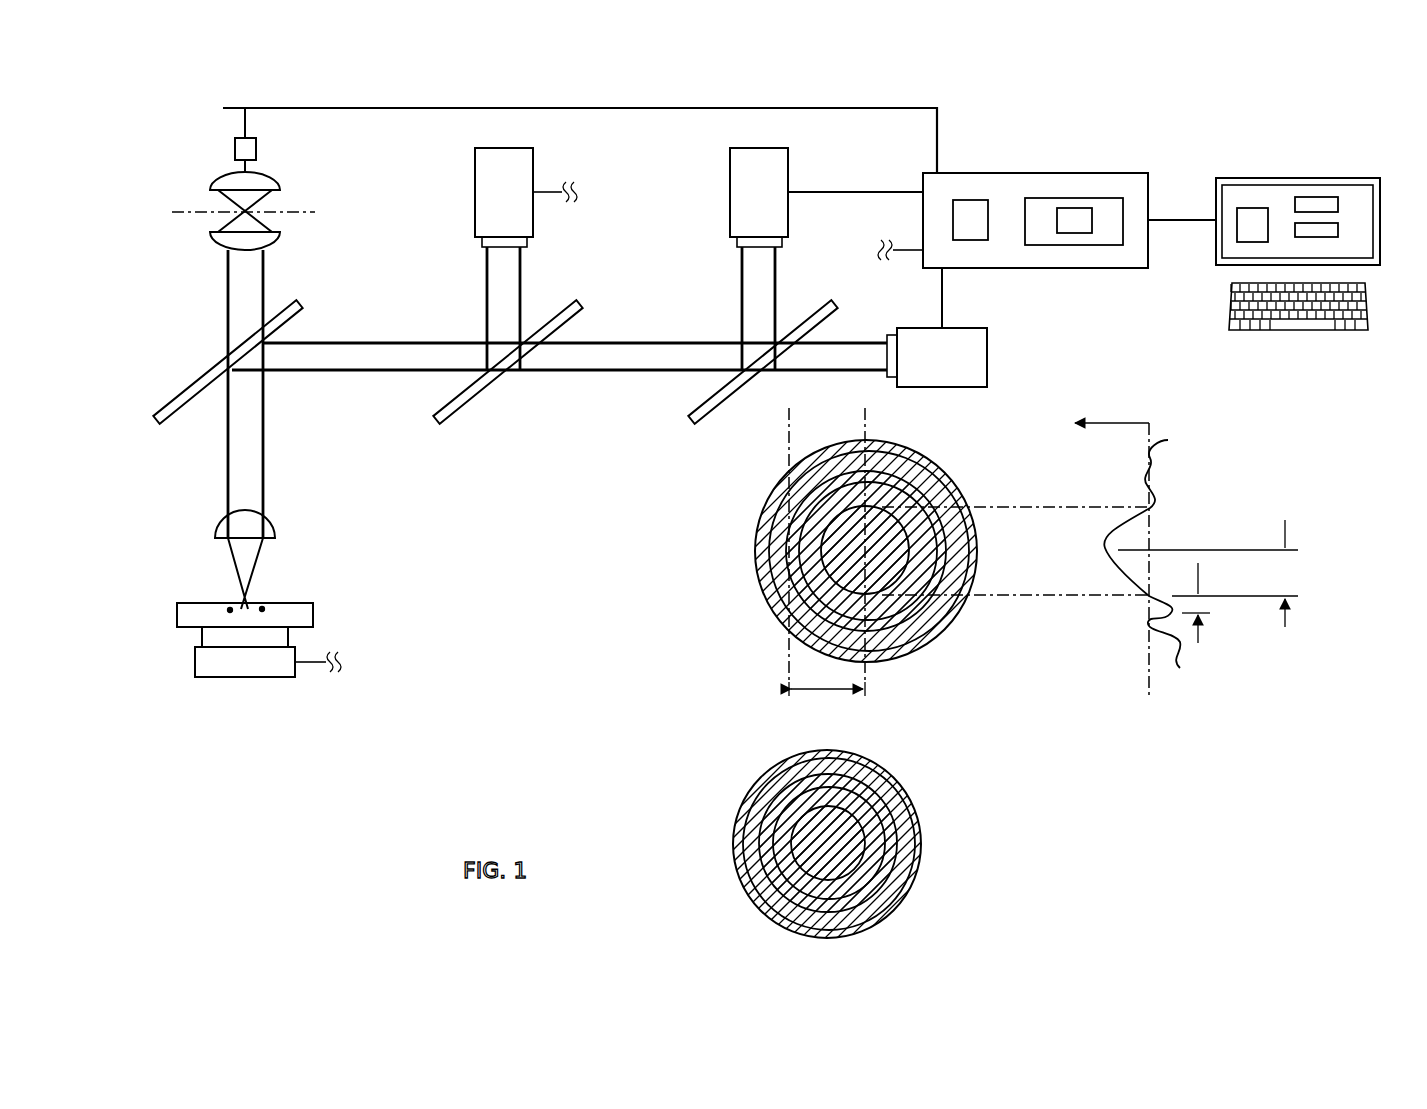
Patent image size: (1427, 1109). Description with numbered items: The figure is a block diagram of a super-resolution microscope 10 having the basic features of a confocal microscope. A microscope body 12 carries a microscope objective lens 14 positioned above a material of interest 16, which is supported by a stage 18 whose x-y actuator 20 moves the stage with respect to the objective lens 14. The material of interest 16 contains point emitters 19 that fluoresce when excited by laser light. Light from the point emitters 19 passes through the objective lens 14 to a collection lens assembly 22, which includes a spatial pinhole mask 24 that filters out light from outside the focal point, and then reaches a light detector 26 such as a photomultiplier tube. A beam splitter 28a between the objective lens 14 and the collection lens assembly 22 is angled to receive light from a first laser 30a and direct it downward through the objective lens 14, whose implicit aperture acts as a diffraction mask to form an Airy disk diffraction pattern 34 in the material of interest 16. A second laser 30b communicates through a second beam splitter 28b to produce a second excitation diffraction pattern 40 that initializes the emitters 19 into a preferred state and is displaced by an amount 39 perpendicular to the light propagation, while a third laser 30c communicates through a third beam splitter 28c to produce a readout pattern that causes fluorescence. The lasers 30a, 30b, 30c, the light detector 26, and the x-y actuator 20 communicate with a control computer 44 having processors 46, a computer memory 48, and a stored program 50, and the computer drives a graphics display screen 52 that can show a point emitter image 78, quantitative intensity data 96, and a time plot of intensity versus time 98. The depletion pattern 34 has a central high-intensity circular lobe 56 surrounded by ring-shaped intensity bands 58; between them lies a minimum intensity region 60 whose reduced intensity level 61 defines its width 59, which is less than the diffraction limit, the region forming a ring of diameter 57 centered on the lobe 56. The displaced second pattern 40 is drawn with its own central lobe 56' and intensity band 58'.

The super-resolution microscope 10 is at (218, 93).
The microscope body 12 is at (206, 296).
The microscope objective lens 14 is at (207, 524).
The material of interest 16 is at (177, 612).
The stage 18 is at (202, 637).
The point emitters 19 is at (262, 607).
The x-y actuator 20 is at (195, 662).
The collection lens assembly 22 is at (204, 167).
The spatial pinhole mask 24 is at (240, 212).
The light detector 26 is at (257, 148).
The beam splitter 28a is at (207, 356).
The second beam splitter 28b is at (688, 430).
The third beam splitter 28c is at (502, 412).
The first laser 30a is at (987, 360).
The second laser 30b is at (758, 148).
The third laser 30c is at (503, 148).
The Airy disk diffraction pattern 34 is at (758, 482).
The displacement amount 39 is at (828, 690).
The second excitation diffraction pattern 40 is at (752, 765).
The control computer 44 is at (1040, 173).
The processors 46 is at (970, 200).
The computer memory 48 is at (1075, 245).
The stored program 50 is at (1075, 208).
The graphics display screen 52 is at (1298, 178).
The central high-intensity circular lobe 56 is at (950, 552).
The core 56' is at (850, 842).
The diameter 57 is at (1288, 572).
The ring-shaped intensity bands 58 is at (926, 606).
The cladding 58' is at (938, 828).
The width 59 is at (1203, 604).
The minimum intensity region 60 is at (815, 587).
The reduced light intensity level 61 is at (1147, 662).
The point emitter image 78 is at (1252, 208).
The quantitative intensity data 96 is at (1338, 200).
The time plot of intensity versus time 98 is at (1338, 228).